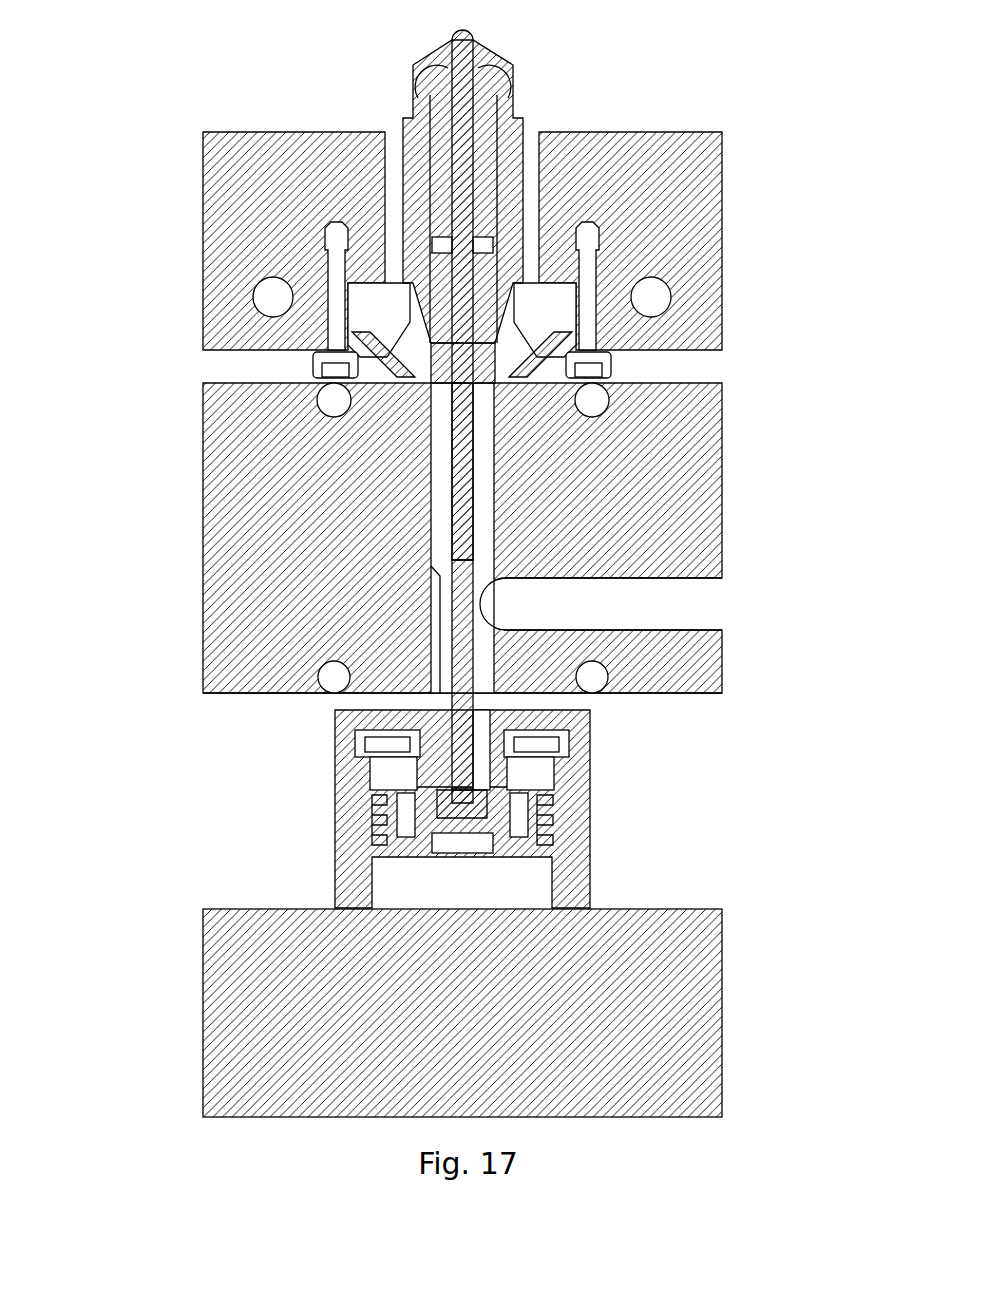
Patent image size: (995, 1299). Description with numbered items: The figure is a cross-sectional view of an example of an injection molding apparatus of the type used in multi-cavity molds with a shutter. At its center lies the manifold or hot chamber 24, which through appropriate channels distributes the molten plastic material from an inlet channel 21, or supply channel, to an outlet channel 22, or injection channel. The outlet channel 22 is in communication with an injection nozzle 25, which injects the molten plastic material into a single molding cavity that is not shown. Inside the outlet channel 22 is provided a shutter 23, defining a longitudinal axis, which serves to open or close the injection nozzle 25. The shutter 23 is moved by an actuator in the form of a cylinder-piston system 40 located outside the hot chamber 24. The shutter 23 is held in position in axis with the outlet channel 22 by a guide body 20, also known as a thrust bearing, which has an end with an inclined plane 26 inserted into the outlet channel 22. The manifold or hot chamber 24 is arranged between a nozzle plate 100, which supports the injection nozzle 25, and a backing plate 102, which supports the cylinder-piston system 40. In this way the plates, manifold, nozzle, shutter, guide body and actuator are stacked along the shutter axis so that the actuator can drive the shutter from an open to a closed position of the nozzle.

The nozzle plate 100 is at (703, 213).
The backing plate 102 is at (704, 1014).
The injection nozzle 25 is at (519, 107).
The shutter 23 is at (456, 303).
The outlet channel 22 is at (440, 502).
The manifold 24 is at (197, 503).
The inclined plane 26 is at (445, 576).
The inlet channel 21 is at (672, 610).
The guide body 20 is at (441, 722).
The cylinder-piston system 40 is at (405, 844).